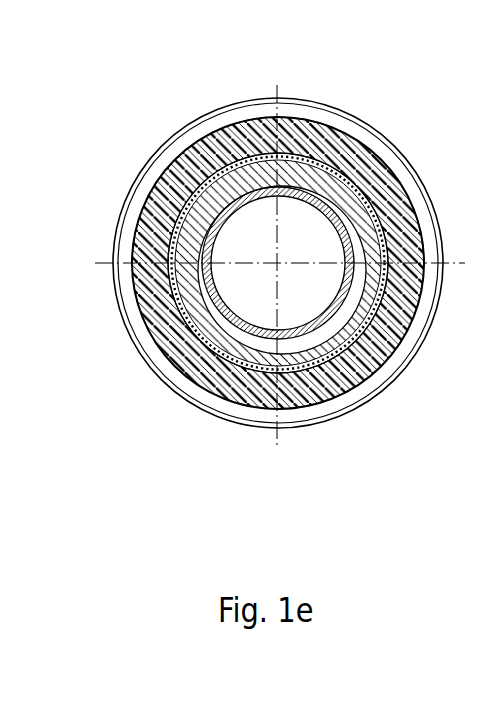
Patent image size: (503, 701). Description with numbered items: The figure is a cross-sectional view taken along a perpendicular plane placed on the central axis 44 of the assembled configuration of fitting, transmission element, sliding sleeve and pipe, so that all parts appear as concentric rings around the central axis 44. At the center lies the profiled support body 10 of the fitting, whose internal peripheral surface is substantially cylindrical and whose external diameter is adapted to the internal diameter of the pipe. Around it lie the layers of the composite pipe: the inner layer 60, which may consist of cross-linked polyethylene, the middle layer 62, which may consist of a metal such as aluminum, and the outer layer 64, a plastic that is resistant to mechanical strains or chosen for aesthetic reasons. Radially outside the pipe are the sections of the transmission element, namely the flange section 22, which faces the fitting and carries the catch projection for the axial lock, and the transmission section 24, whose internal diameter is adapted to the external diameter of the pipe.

The support body 10 is at (340, 305).
The flange section 22 is at (347, 111).
The transmission section 24 is at (401, 193).
The central axis 44 is at (278, 263).
The inner layer 60 is at (318, 345).
The middle layer 62 is at (392, 348).
The outer layer 64 is at (416, 289).